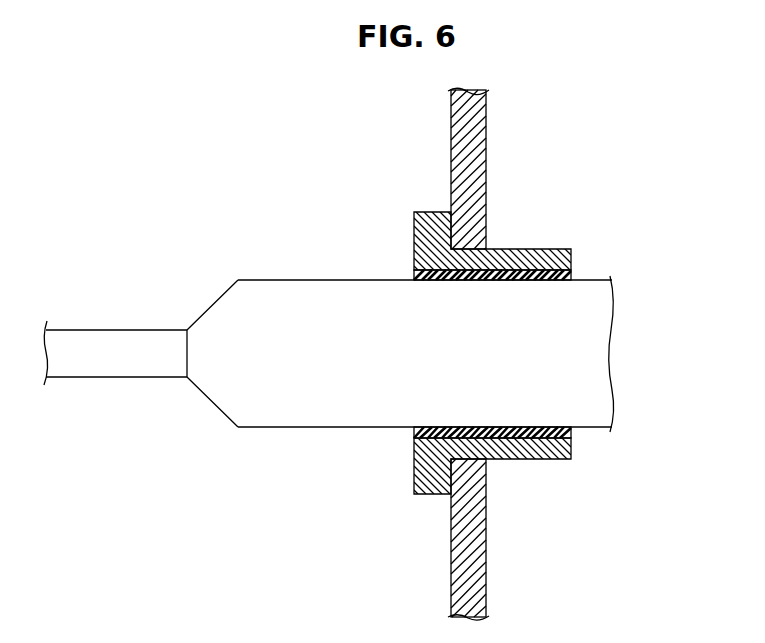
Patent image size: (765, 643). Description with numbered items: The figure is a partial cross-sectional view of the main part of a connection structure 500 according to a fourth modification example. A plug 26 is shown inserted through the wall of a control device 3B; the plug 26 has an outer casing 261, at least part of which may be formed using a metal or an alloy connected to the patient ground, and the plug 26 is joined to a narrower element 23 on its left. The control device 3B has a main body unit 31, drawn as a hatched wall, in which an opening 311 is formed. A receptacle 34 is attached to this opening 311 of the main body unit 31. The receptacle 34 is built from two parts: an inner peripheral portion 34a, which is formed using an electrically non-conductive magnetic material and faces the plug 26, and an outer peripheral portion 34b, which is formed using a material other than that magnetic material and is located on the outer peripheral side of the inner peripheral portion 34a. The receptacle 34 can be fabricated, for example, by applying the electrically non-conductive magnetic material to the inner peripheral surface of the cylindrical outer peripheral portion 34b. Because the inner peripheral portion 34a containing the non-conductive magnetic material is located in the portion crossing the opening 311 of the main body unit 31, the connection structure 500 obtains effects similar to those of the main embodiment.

The connection structure 500 is at (357, 128).
The pipe 23 is at (114, 330).
The plug 26 is at (309, 272).
The outer casing 261 is at (351, 372).
The control device 3B is at (688, 172).
The main body unit 31 is at (486, 185).
The opening 311 is at (470, 449).
The receptacle 34 is at (643, 213).
The inner peripheral portion 34a is at (572, 272).
The outer peripheral portion 34b is at (572, 252).